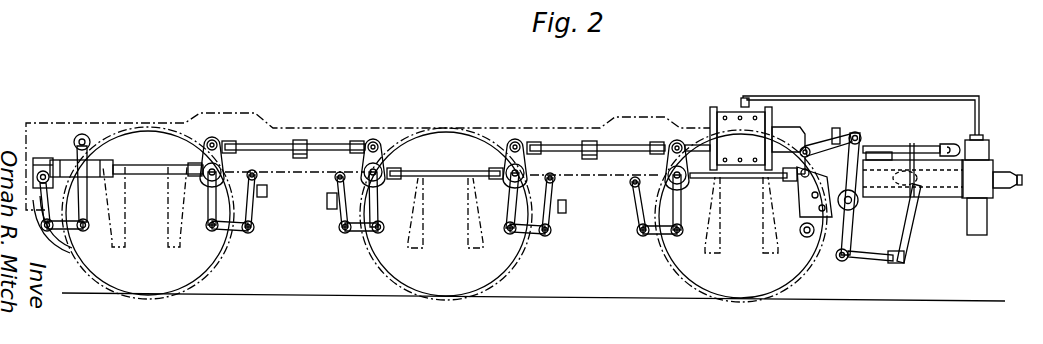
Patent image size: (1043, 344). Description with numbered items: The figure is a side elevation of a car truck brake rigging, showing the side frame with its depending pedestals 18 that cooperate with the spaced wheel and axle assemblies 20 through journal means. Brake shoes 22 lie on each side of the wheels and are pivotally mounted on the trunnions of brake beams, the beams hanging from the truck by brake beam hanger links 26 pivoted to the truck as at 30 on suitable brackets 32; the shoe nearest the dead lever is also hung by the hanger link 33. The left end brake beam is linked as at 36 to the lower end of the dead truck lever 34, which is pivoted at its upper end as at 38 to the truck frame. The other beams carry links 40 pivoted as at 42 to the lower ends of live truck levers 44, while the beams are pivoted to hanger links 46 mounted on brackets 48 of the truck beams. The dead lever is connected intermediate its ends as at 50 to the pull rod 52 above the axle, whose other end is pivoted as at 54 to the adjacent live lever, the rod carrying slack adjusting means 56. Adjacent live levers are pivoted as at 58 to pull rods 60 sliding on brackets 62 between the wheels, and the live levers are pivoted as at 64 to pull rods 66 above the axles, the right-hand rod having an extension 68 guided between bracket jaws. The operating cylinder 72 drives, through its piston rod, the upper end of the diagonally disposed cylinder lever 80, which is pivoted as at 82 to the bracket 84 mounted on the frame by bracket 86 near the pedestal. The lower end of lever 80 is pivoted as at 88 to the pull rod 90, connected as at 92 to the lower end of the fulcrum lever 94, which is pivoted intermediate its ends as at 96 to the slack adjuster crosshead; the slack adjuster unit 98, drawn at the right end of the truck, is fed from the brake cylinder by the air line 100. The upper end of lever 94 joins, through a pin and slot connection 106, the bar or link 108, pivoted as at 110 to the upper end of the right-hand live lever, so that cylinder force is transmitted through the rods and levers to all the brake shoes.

The pedestals 18 is at (168, 238).
The wheel and axle assemblies 20 is at (368, 254).
The brake shoes 22 is at (60, 252).
The brake beam hanger links 26 is at (256, 200).
The pivot 30 is at (258, 176).
The brackets 32 is at (268, 191).
The hanger link 33 is at (38, 157).
The dead truck lever 34 is at (78, 140).
The pivot 36 is at (82, 231).
The pivot 38 is at (89, 138).
The links 40 is at (536, 234).
The pivot 42 is at (513, 236).
The live truck levers 44 is at (233, 141).
The brake beam hanger links 46 is at (468, 205).
The bracket 48 is at (254, 228).
The pivot 50 is at (95, 154).
The pull rod 52 is at (150, 164).
The pivot 54 is at (203, 168).
The slack adjusting means 56 is at (45, 170).
The pivot 58 is at (212, 139).
The pull rods 60 is at (331, 143).
The brackets 62 is at (300, 139).
The pivot 64 is at (382, 166).
The pull rods 66 is at (413, 168).
The extension 68 is at (880, 152).
The operating cylinder 72 is at (720, 108).
The cylinder lever 80 is at (855, 132).
The pivot 82 is at (858, 205).
The bracket 84 is at (821, 218).
The bracket 86 is at (805, 237).
The pivot 88 is at (846, 259).
The pull rod 90 is at (880, 261).
The pivot 92 is at (904, 257).
The fulcrum lever 94 is at (907, 236).
The pivot 96 is at (926, 197).
The valve 98 is at (990, 163).
The air line 100 is at (852, 96).
The pin and slot connection 106 is at (911, 143).
The bar or link 108 is at (930, 146).
The pivot 110 is at (808, 145).